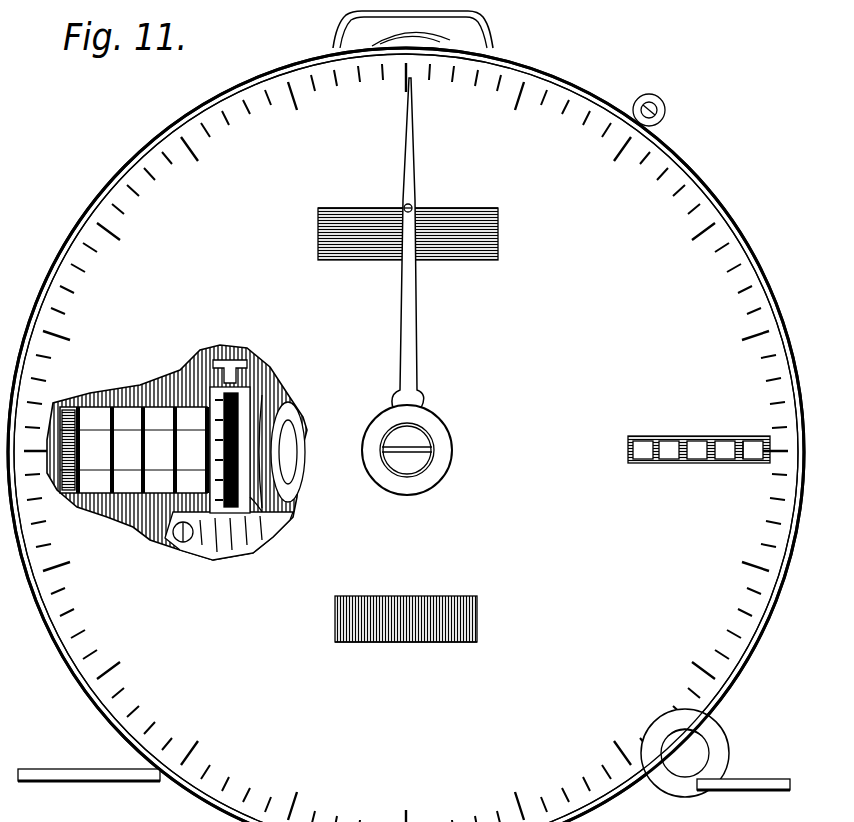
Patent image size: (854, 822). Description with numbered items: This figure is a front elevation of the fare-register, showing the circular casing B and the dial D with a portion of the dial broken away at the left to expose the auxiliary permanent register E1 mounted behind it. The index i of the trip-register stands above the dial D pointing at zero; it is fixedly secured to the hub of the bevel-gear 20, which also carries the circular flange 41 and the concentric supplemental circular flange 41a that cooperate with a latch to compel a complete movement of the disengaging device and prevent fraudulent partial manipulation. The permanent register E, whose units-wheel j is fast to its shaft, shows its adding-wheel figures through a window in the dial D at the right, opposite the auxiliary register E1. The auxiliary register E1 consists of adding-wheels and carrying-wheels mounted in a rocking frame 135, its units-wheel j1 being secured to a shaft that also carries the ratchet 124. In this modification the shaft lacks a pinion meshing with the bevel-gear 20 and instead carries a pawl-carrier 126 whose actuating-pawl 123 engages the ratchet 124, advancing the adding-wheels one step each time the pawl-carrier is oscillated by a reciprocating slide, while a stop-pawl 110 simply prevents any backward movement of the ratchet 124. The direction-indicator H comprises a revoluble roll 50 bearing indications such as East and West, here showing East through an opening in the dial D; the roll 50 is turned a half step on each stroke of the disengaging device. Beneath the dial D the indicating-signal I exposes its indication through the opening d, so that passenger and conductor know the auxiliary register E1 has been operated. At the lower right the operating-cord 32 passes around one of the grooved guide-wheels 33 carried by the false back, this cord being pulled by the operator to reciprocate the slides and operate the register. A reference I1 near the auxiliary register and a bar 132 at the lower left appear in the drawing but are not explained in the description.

The circular casing B is at (754, 244).
The dial D is at (411, 452).
The direction-indicator H is at (467, 207).
The revoluble roll 50 is at (490, 233).
The opening d is at (402, 595).
The indicating-signal I is at (473, 615).
The permanent register E is at (692, 437).
The units-wheel j is at (757, 437).
The index i is at (407, 313).
The bevel-gear 20 is at (273, 380).
The rocking frame 135 is at (78, 407).
The ratchet 124 is at (237, 463).
The actuating-pawl 123 is at (243, 410).
The pawl-carrier 126 is at (227, 366).
The circular flange 41 is at (287, 408).
The supplemental circular flange 41a is at (297, 500).
The stop-pawl 110 is at (250, 497).
The units-wheel j1 is at (190, 535).
The auxiliary permanent register E1 is at (137, 512).
The base plate I1 is at (253, 550).
The grooved guide-wheels 33 is at (722, 722).
The operating-cord 32 is at (767, 782).
The bracket bar 132 is at (80, 773).